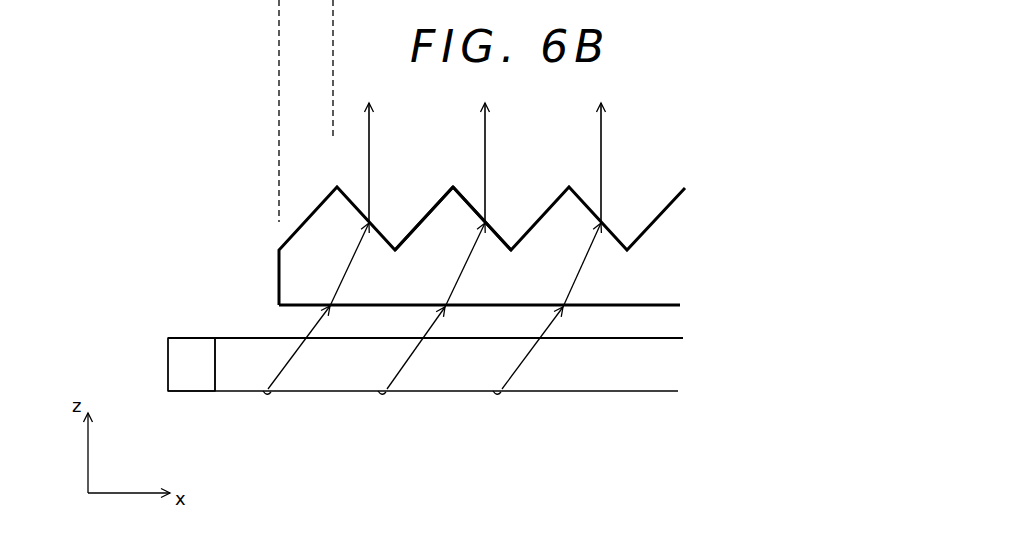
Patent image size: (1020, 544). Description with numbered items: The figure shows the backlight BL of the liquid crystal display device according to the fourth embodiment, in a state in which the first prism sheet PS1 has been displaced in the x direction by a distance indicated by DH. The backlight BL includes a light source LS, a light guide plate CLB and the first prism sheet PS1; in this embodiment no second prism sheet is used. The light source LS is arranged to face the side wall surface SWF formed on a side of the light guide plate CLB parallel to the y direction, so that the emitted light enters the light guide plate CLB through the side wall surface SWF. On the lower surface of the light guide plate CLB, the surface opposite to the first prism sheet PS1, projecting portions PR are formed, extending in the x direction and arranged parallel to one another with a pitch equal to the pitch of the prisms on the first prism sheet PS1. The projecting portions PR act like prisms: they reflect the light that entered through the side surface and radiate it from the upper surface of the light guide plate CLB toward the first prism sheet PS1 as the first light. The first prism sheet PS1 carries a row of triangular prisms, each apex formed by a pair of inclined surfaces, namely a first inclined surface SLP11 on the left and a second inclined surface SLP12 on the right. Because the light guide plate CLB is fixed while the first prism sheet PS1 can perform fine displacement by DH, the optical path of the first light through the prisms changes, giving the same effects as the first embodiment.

The displacement distance DH is at (331, 50).
The backlight BL is at (800, 182).
The first prism sheet PS1 is at (646, 277).
The first inclined surface SLP11 is at (427, 212).
The second inclined surface SLP12 is at (465, 199).
The light guide plate CLB is at (607, 377).
The light source LS is at (178, 364).
The side wall surface SWF is at (215, 372).
The projecting portions PR is at (385, 393).